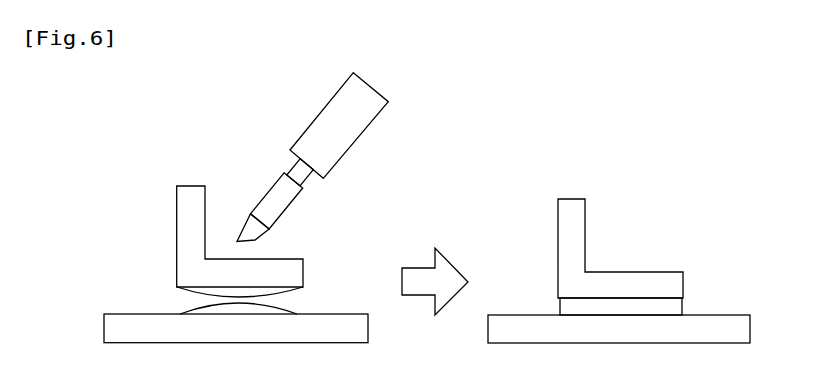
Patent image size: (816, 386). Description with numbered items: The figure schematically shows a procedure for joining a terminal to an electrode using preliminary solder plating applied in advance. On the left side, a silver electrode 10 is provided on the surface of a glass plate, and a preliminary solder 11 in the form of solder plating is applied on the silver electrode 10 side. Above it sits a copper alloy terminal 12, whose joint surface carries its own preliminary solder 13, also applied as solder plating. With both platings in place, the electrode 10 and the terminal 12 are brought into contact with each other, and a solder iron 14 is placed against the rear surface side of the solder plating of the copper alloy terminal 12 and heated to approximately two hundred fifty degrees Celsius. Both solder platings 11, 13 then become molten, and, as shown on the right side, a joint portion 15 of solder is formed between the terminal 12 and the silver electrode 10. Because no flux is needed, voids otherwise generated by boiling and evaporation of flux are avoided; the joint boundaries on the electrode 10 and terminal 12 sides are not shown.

The silver electrode 10 is at (278, 333).
The preliminary solder 11 is at (273, 307).
The copper alloy terminal 12 is at (263, 268).
The preliminary solder 13 is at (220, 296).
The solder iron 14 is at (288, 208).
The joint portion 15 is at (670, 308).